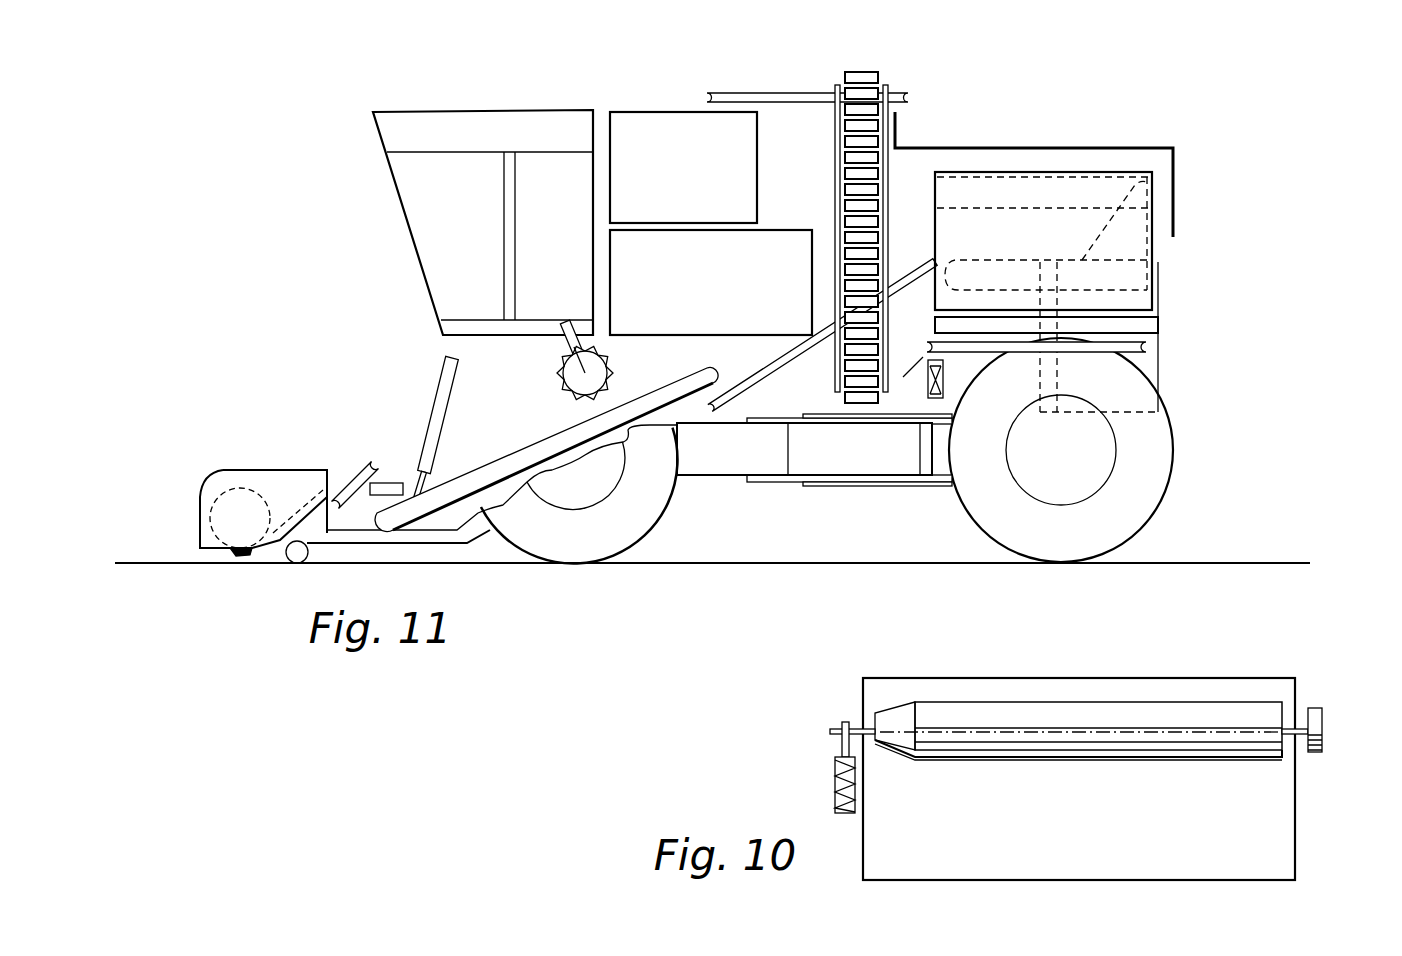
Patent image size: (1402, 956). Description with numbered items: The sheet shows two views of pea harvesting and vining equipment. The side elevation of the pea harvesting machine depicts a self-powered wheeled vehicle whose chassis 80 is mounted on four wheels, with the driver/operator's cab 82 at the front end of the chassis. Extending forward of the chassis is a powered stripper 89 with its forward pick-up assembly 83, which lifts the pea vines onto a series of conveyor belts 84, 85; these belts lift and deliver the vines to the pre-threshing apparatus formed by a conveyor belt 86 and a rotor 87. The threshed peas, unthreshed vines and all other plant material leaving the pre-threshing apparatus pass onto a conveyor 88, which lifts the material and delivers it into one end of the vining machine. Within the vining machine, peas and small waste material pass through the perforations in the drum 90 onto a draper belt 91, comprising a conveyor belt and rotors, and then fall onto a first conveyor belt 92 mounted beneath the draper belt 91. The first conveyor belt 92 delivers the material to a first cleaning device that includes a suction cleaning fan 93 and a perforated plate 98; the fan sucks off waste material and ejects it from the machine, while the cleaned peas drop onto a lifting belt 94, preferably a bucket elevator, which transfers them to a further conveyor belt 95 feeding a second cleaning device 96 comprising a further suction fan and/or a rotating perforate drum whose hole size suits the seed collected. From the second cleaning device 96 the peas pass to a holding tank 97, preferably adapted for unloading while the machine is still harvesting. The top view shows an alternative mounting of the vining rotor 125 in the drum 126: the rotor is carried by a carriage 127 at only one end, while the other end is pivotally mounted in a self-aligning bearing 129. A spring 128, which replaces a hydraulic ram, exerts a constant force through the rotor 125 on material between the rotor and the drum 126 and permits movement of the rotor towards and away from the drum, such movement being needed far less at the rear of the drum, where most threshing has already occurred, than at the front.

In FIG. 11, the chassis 80 is at (735, 462).
In FIG. 11, the driver/operator's cab 82 is at (412, 182).
In FIG. 11, the pick-up header 83 is at (230, 450).
In FIG. 11, the conveyor belt 84 is at (350, 445).
In FIG. 11, the conveyor belt 85 is at (390, 483).
In FIG. 11, the conveyor belt 86 is at (673, 390).
In FIG. 11, the rotor 87 is at (565, 372).
In FIG. 11, the conveyor 88 is at (773, 372).
In FIG. 11, the powered stripper 89 is at (1160, 195).
In FIG. 11, the drum 90 is at (990, 172).
In FIG. 11, the draper belt 91 is at (1147, 325).
In FIG. 11, the first conveyor belt 92 is at (1150, 347).
In FIG. 11, the suction cleaning fan 93 is at (943, 383).
In FIG. 11, the lifting belt 94 is at (857, 403).
In FIG. 11, the further conveyor belt 95 is at (788, 95).
In FIG. 11, the second cleaning device 96 is at (648, 127).
In FIG. 11, the holding tank 97 is at (782, 250).
In FIG. 11, the perforated plate 98 is at (910, 380).
In FIG. 10, the rotor 125 is at (1160, 702).
In FIG. 10, the drum 126 is at (1075, 678).
In FIG. 10, the carriage 127 is at (842, 728).
In FIG. 10, the spring 128 is at (835, 782).
In FIG. 10, the self-aligning bearing 129 is at (1322, 725).